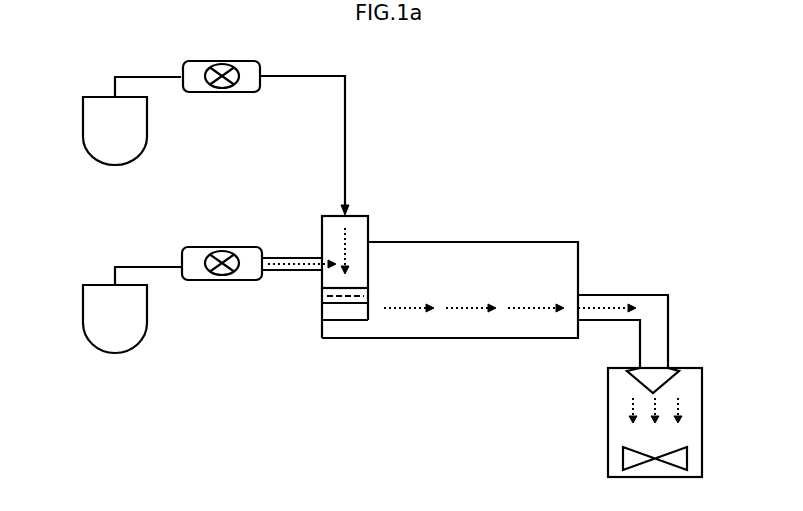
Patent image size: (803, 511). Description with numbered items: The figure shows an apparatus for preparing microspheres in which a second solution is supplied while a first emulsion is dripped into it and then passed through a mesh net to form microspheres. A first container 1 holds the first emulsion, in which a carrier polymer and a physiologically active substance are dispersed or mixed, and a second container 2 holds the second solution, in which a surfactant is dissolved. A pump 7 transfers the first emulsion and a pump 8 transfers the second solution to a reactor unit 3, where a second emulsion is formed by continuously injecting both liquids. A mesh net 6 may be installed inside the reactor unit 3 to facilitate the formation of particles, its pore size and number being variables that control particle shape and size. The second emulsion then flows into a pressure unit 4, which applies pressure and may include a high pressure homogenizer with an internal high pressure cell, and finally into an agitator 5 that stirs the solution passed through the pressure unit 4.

The first container 1 is at (82, 130).
The second container 2 is at (80, 328).
The reactor unit 3 is at (374, 227).
The pressure unit 4 is at (498, 340).
The agitator 5 is at (706, 463).
The mesh net 6 is at (318, 296).
The pump 7 is at (222, 93).
The pump 8 is at (225, 284).